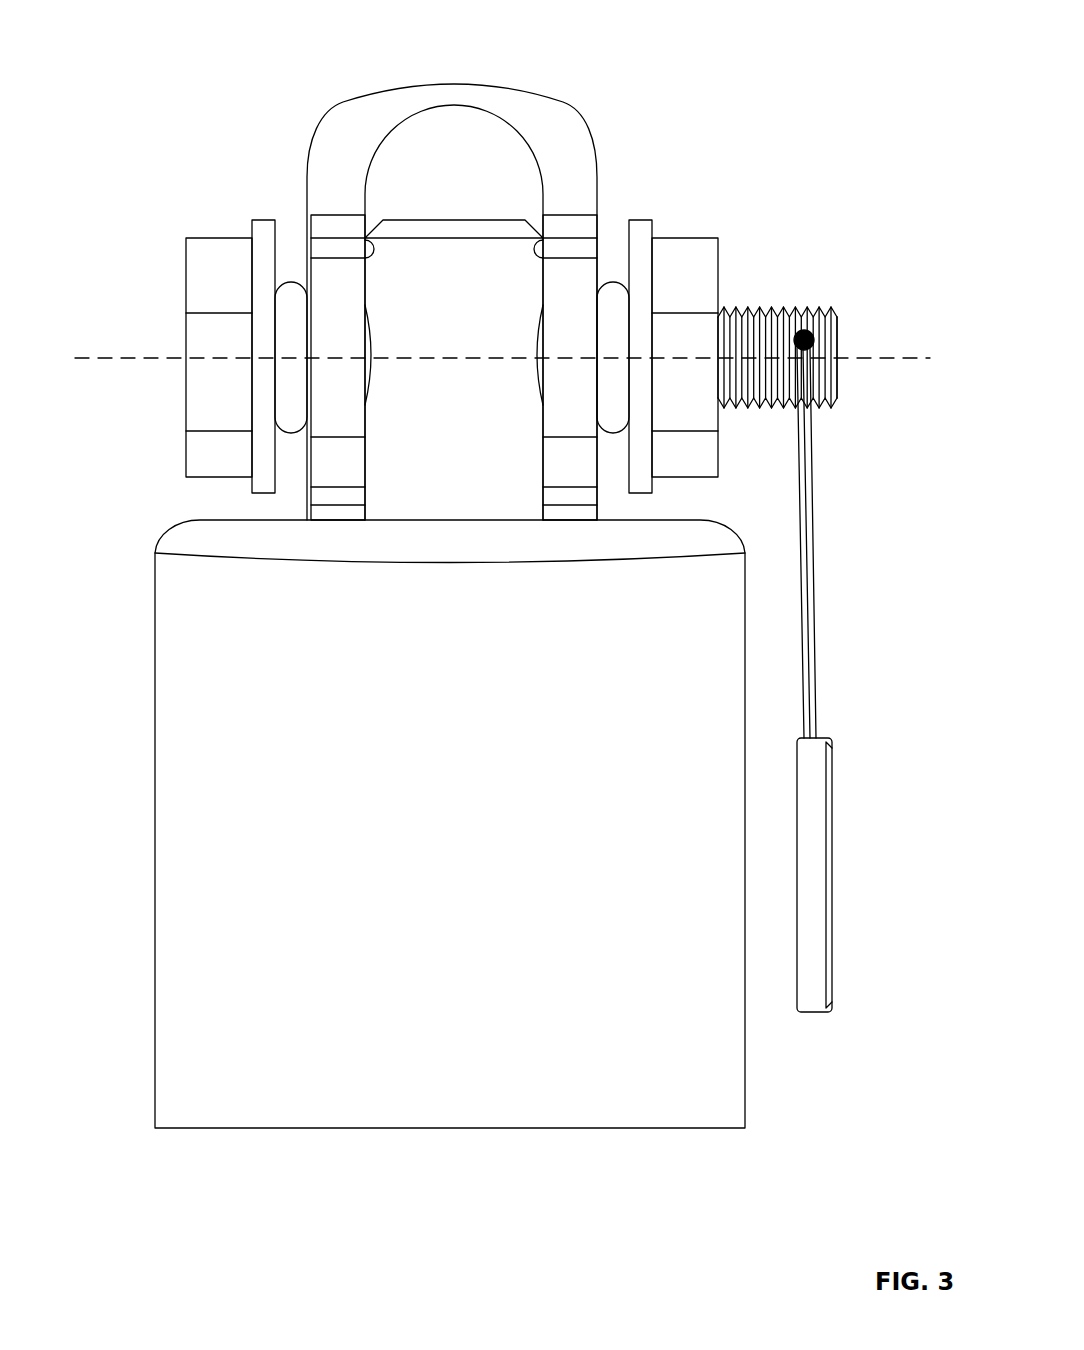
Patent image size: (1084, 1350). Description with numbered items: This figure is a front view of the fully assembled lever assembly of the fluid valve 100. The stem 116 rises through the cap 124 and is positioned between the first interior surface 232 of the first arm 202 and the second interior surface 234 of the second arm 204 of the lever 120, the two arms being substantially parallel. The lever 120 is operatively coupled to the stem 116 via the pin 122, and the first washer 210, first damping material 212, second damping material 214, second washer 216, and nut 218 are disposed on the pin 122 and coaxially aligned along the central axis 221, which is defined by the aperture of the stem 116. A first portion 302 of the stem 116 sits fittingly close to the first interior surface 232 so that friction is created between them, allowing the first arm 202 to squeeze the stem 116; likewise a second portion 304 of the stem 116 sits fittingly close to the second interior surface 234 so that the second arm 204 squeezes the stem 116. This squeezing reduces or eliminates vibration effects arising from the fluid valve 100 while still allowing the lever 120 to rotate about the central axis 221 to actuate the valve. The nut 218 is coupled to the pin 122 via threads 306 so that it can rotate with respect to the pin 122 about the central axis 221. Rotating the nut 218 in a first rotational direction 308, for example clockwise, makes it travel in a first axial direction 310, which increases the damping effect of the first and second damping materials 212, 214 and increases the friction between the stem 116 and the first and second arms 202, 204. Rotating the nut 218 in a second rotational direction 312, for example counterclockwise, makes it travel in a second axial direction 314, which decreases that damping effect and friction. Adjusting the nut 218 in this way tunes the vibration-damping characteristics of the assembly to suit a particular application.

The fluid valve 100 is at (137, 36).
The stem 116 is at (453, 428).
The lever 120 is at (455, 82).
The pin 122 is at (205, 238).
The cap 124 is at (155, 805).
The first arm 202 is at (338, 398).
The second arm 204 is at (572, 400).
The first washer 210 is at (263, 495).
The first damping material 212 is at (288, 392).
The second damping material 214 is at (617, 403).
The second washer 216 is at (640, 356).
The nut 218 is at (685, 365).
The central axis 221 is at (130, 357).
The first interior surface 232 is at (365, 238).
The second interior surface 234 is at (543, 238).
The first portion 302 is at (368, 288).
The second portion 304 is at (535, 285).
The threads 306 is at (776, 292).
The first rotational direction 308 is at (741, 236).
The first axial direction 310 is at (817, 203).
The second rotational direction 312 is at (741, 467).
The second axial direction 314 is at (930, 163).